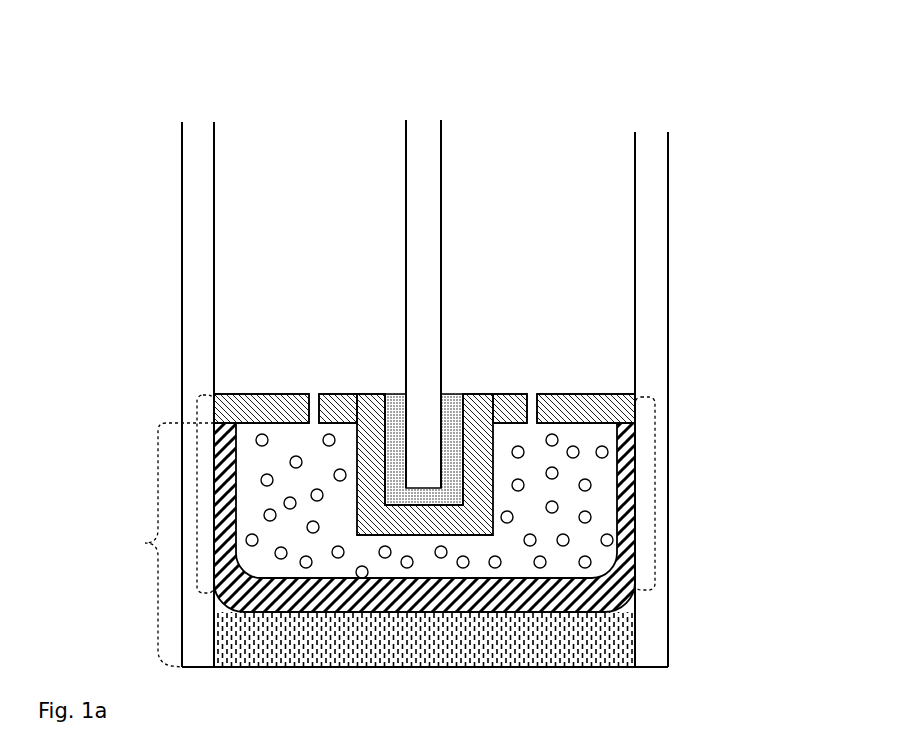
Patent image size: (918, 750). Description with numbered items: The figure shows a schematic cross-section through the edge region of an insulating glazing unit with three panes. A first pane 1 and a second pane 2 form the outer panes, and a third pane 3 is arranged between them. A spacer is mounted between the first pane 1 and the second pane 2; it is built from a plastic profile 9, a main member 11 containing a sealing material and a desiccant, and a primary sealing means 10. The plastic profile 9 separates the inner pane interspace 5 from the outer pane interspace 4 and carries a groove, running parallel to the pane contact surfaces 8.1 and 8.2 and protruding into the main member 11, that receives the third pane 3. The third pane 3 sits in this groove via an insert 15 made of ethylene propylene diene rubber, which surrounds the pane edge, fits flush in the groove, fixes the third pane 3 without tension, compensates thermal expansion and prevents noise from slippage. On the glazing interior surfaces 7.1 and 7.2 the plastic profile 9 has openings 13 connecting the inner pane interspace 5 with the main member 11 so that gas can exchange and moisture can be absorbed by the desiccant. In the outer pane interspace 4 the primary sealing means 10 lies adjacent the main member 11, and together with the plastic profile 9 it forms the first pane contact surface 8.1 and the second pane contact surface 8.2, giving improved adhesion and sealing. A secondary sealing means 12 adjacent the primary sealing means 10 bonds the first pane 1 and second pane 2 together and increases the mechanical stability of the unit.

The first pane 1 is at (192, 222).
The second pane 2 is at (648, 240).
The third pane 3 is at (425, 143).
The outer pane interspace 4 is at (146, 543).
The inner pane interspace 5 is at (263, 208).
The glazing interior surface 7.1 is at (213, 386).
The glazing interior surface 7.2 is at (612, 391).
The first pane contact surface 8.1 is at (197, 493).
The second pane contact surface 8.2 is at (655, 493).
The plastic profile 9 is at (367, 412).
The primary sealing means 10 is at (635, 591).
The main member 11 is at (605, 505).
The secondary sealing means 12 is at (620, 634).
The openings 13 is at (315, 394).
The insert 15 is at (395, 410).